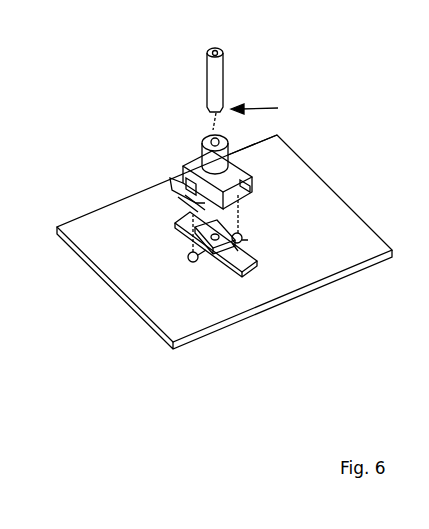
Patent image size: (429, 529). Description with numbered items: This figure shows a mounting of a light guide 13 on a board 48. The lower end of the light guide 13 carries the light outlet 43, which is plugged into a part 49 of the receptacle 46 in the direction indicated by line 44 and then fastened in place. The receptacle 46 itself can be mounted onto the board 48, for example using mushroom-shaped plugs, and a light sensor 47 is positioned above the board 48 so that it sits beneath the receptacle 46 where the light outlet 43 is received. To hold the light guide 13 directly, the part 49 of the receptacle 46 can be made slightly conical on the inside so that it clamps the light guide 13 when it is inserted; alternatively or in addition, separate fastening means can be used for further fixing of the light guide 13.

The light guide 13 is at (221, 67).
The light outlet 43 is at (266, 108).
The line indicating plugging direction 44 is at (213, 128).
The receptacle 46 is at (184, 159).
The light sensor 47 is at (217, 270).
The board 48 is at (337, 226).
The part of the receptacle 49 is at (280, 135).